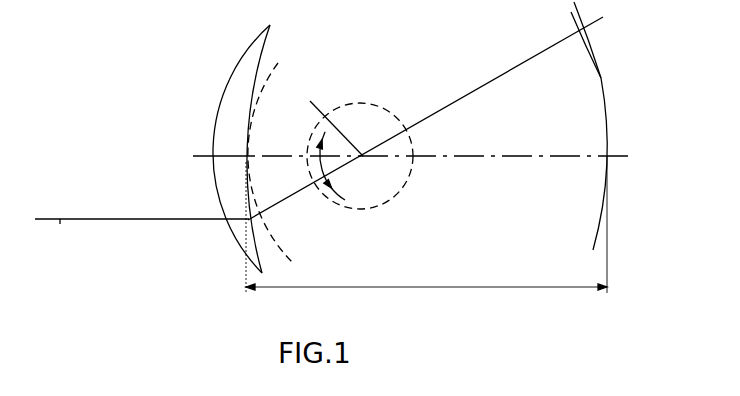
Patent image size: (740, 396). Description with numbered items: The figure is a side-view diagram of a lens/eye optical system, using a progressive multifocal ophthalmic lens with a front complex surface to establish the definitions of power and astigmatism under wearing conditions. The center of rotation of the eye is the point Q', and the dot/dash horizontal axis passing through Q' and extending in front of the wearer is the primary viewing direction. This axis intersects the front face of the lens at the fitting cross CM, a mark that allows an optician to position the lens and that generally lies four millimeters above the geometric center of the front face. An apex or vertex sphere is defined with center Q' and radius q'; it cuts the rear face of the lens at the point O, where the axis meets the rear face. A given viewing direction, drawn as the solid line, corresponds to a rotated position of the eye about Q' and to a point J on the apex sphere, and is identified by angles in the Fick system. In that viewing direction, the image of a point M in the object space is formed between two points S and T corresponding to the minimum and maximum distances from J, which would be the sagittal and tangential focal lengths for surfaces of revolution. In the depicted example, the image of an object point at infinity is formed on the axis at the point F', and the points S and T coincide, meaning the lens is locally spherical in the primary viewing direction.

The fitting cross CM is at (398, 156).
The point O is at (241, 149).
The radius of the apex sphere q' is at (281, 162).
The center of rotation of the eye Q' is at (360, 155).
The point M in the object space M is at (142, 237).
The point J on the apex sphere J is at (425, 126).
The point F' is at (597, 185).
The point S is at (590, 39).
The point T is at (577, 44).